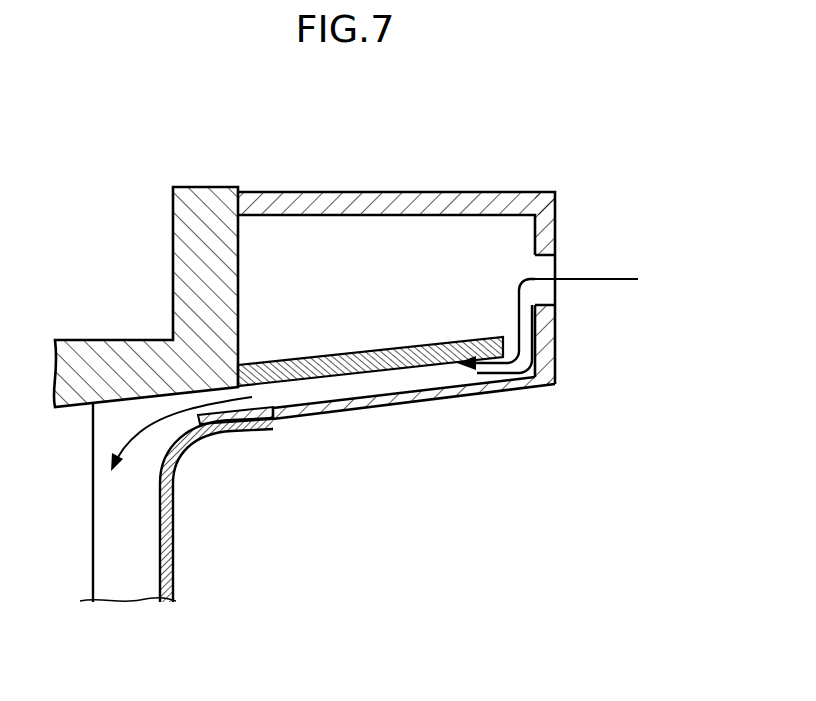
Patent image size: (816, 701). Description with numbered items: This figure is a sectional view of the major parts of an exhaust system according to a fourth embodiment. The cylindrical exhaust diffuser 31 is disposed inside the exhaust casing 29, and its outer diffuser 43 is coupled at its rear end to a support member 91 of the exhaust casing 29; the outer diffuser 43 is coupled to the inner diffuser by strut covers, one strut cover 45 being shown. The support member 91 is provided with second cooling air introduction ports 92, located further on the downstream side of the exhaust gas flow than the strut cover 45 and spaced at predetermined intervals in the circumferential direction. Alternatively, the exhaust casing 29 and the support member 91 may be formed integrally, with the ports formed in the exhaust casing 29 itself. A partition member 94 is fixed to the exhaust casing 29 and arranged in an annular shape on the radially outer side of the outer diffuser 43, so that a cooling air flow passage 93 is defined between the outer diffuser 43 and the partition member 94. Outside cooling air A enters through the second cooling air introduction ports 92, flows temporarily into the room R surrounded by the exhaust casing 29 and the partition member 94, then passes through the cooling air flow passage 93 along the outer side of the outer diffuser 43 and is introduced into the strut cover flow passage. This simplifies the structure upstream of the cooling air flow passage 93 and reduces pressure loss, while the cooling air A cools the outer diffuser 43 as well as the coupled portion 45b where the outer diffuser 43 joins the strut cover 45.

The exhaust casing 29 is at (168, 236).
The support member 91 is at (547, 233).
The second cooling air introduction port 92 is at (547, 265).
The exhaust diffuser 31 is at (538, 388).
The partition member 94 is at (345, 362).
The room R is at (440, 298).
The cooling air flow passage 93 is at (408, 380).
The outer diffuser 43 is at (333, 410).
The strut cover 45 is at (168, 531).
The coupled portion 45b is at (250, 410).
The cooling air A is at (93, 452).